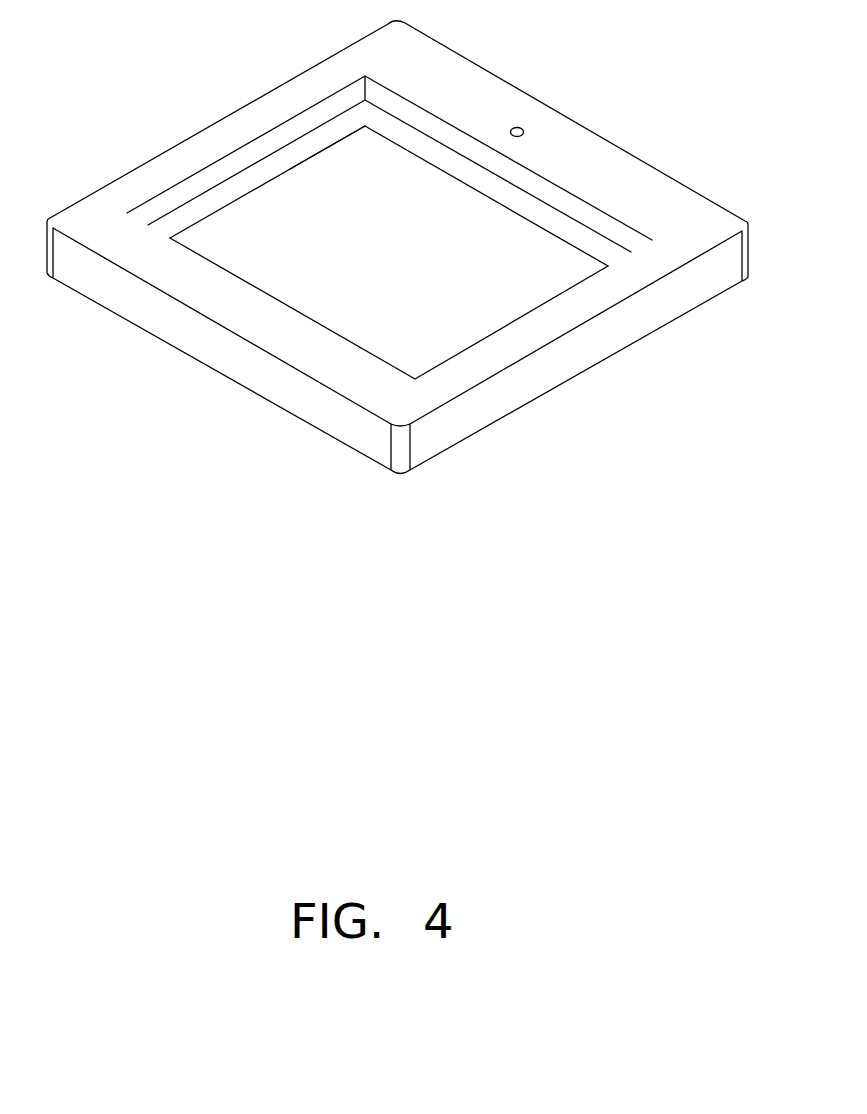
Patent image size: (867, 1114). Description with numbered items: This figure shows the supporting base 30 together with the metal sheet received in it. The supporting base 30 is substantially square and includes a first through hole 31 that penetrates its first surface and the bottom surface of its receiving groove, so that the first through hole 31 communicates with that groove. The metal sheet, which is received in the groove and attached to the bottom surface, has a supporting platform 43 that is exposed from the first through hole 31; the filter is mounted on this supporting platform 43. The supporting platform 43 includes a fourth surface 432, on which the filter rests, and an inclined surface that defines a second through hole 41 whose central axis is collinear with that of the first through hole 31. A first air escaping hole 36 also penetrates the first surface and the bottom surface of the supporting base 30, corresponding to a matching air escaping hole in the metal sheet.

The supporting base 30 is at (175, 154).
The first through hole 31 is at (539, 187).
The first air escaping hole 36 is at (517, 127).
The second through hole 41 is at (528, 285).
The supporting platform 43 is at (293, 154).
The fourth surface 432 is at (332, 126).